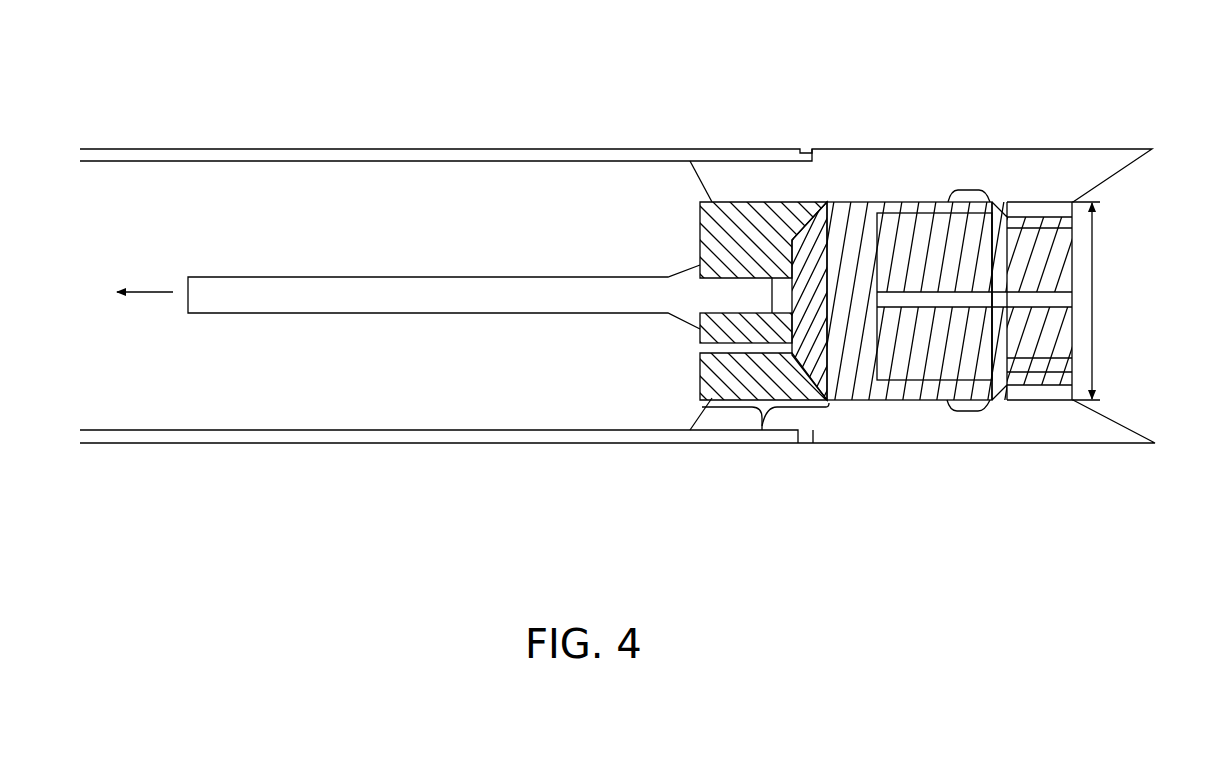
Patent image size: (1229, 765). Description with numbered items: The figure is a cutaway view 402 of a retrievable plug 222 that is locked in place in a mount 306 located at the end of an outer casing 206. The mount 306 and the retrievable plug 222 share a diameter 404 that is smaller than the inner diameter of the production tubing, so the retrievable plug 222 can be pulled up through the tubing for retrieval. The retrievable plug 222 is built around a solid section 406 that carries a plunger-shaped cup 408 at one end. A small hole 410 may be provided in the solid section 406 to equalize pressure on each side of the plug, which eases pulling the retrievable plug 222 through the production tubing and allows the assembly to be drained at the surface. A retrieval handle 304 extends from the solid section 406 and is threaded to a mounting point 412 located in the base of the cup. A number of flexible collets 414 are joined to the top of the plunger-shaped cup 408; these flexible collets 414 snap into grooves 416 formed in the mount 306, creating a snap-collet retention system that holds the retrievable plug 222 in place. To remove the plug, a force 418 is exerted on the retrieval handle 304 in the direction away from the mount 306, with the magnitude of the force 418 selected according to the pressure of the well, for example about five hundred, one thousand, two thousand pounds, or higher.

The outer casing 206 is at (408, 148).
The retrievable plug 222 is at (880, 192).
The retrieval handle 304 is at (280, 277).
The mount 306 is at (867, 443).
The cutaway view 402 is at (763, 78).
The diameter 404 is at (1092, 292).
The solid section 406 is at (762, 443).
The plunger-shaped cup 408 is at (807, 374).
The small hole 410 is at (700, 383).
The mounting point 412 is at (700, 331).
The flexible collets 414 is at (945, 343).
The grooves 416 is at (970, 190).
The force 418 is at (147, 292).